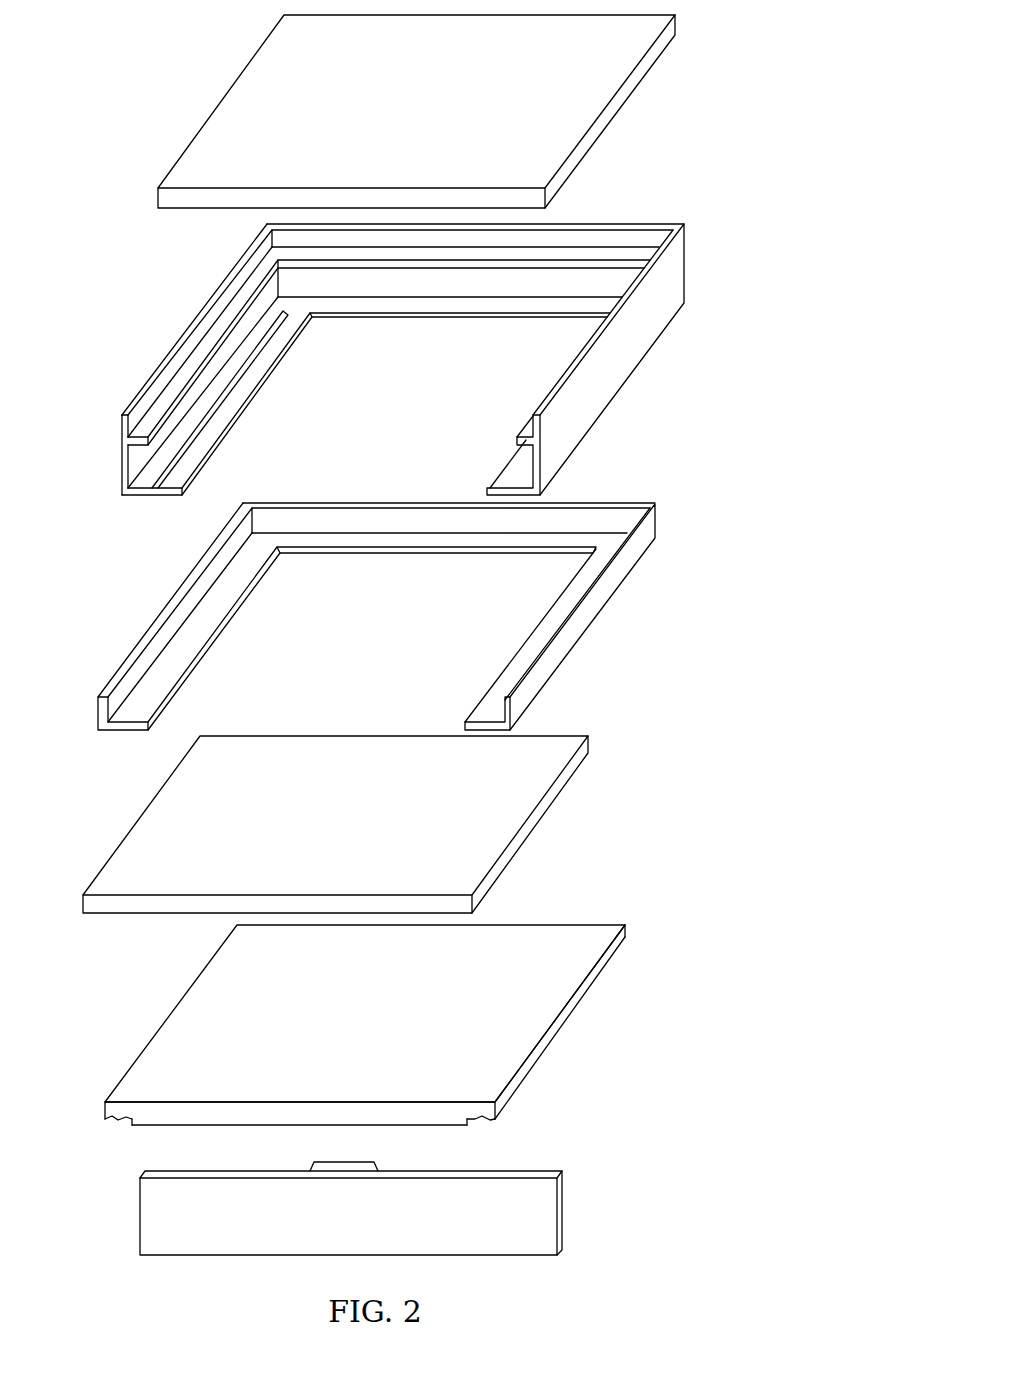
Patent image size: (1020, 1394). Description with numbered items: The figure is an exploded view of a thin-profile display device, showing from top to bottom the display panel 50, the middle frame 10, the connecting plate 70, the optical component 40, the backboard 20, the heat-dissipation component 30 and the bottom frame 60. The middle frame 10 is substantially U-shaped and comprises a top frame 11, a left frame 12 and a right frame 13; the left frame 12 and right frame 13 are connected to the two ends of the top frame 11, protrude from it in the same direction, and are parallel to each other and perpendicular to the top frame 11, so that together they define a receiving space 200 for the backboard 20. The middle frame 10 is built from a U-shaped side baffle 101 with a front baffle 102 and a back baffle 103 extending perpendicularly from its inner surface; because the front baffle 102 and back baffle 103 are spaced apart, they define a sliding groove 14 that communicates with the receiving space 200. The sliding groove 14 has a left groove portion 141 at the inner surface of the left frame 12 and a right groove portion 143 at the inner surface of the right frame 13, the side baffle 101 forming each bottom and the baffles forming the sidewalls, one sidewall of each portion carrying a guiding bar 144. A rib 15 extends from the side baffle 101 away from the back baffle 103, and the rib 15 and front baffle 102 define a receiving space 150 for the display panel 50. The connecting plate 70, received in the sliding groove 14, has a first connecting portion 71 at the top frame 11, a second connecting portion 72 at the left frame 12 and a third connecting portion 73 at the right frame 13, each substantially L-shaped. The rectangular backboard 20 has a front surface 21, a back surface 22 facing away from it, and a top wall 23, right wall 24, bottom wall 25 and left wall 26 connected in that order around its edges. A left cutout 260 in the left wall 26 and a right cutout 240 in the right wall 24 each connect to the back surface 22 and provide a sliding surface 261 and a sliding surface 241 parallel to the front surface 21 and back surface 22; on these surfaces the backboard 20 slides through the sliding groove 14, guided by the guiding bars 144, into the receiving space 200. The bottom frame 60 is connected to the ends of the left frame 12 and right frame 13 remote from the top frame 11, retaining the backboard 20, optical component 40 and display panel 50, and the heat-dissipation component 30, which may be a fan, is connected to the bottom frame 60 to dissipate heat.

The middle frame 10 is at (382, 359).
The top frame 11 is at (477, 311).
The left frame 12 is at (178, 416).
The right frame 13 is at (571, 359).
The sliding groove 14 is at (452, 459).
The rib 15 is at (156, 372).
The side baffle 101 is at (174, 359).
The front baffle 102 is at (177, 347).
The back baffle 103 is at (343, 396).
The left groove portion 141 is at (270, 358).
The right groove portion 143 is at (519, 453).
The guiding bar 144 is at (225, 400).
The receiving space 150 is at (198, 325).
The receiving space 200 is at (503, 360).
The backboard 20 is at (361, 1027).
The front surface 21 is at (522, 972).
The back surface 22 is at (540, 1067).
The top wall 23 is at (613, 924).
The right wall 24 is at (560, 1030).
The bottom wall 25 is at (201, 1116).
The left wall 26 is at (147, 1040).
The right cutout 240 is at (505, 1138).
The sliding surface 241 is at (492, 1119).
The left cutout 260 is at (91, 1137).
The sliding surface 261 is at (107, 1121).
The heat-dissipation component 30 is at (356, 1162).
The optical component 40 is at (498, 795).
The display panel 50 is at (570, 60).
The bottom frame 60 is at (530, 1193).
The connecting plate 70 is at (376, 616).
The first connecting portion 71 is at (476, 521).
The second connecting portion 72 is at (176, 625).
The third connecting portion 73 is at (540, 645).